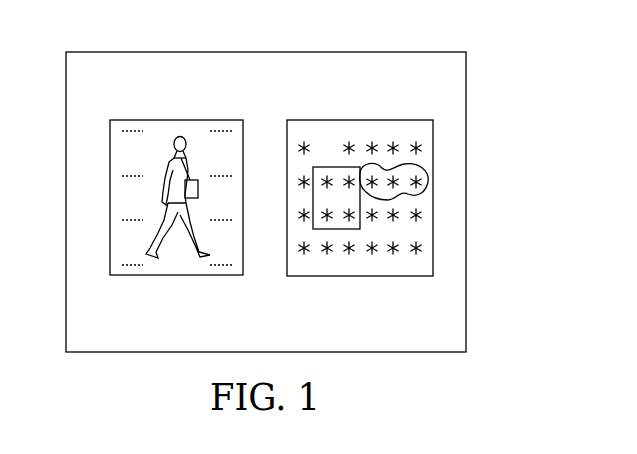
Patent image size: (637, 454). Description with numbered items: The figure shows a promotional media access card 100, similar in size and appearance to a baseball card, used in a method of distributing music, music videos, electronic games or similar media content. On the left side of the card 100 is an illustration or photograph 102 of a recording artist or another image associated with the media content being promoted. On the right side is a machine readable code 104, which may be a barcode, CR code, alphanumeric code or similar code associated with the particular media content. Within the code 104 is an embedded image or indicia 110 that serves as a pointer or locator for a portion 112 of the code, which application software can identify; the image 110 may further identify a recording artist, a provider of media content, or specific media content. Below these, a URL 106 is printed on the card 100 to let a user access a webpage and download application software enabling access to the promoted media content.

The access card 100 is at (127, 51).
The illustration or photograph 102 is at (177, 119).
The machine readable code 104 is at (355, 120).
The URL 106 is at (235, 312).
The image or indicia 110 is at (408, 194).
The portion of the code 112 is at (333, 167).